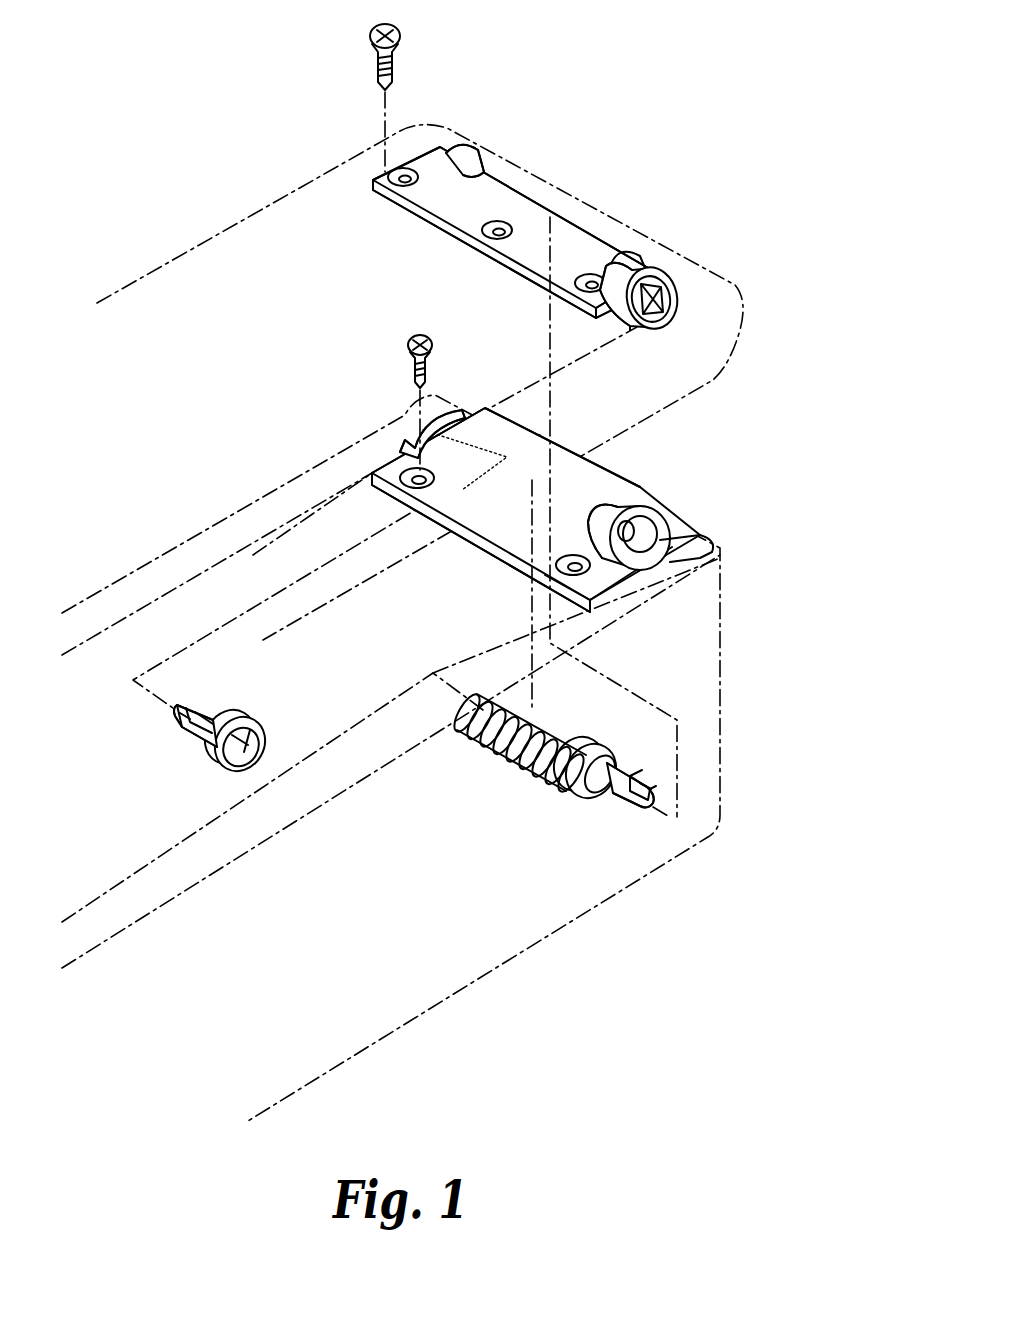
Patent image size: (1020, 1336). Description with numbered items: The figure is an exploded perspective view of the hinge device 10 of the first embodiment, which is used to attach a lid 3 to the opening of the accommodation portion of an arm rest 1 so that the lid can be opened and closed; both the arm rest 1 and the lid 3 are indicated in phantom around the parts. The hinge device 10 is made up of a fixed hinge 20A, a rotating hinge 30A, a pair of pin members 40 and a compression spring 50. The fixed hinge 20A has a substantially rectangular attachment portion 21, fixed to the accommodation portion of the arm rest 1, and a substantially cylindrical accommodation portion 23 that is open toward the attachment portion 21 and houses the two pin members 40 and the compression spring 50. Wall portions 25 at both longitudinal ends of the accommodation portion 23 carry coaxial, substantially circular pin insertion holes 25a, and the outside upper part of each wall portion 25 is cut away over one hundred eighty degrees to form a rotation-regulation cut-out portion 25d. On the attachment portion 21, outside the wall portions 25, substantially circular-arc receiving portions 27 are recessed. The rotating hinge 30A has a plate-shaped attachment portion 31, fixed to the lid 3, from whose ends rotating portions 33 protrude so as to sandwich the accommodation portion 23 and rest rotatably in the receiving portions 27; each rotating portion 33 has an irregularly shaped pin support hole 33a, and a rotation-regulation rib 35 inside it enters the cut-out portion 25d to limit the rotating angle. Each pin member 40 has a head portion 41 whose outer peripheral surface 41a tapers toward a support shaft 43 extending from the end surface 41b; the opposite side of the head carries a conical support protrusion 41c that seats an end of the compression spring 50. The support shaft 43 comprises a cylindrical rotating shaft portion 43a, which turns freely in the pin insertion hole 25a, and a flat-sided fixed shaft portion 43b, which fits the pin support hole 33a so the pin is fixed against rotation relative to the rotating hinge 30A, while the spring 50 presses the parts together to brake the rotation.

The arm rest 1 is at (492, 972).
The lid 3 is at (176, 256).
The hinge device 10 is at (578, 168).
The fixed hinge 20A is at (506, 582).
The attachment portion 21 is at (493, 529).
The accommodation portion 23 is at (587, 474).
The wall portion 25 is at (680, 518).
The pin insertion hole 25a is at (634, 529).
The rotation-regulation cut-out portion 25d is at (548, 572).
The receiving portion 27 is at (715, 546).
The rotating hinge 30A is at (446, 249).
The attachment portion 31 is at (535, 268).
The rotating portion 33 is at (671, 304).
The pin support hole 33a is at (657, 322).
The rotation-regulation rib 35 is at (446, 143).
The pin member 40 is at (235, 657).
The head portion 41 is at (262, 708).
The outer peripheral surface 41a is at (592, 752).
The end surface 41b is at (615, 758).
The support protrusion 41c is at (249, 762).
The support shaft 43 is at (451, 765).
The rotating shaft portion 43a is at (207, 745).
The fixed shaft portion 43b is at (182, 727).
The compression spring 50 is at (522, 755).